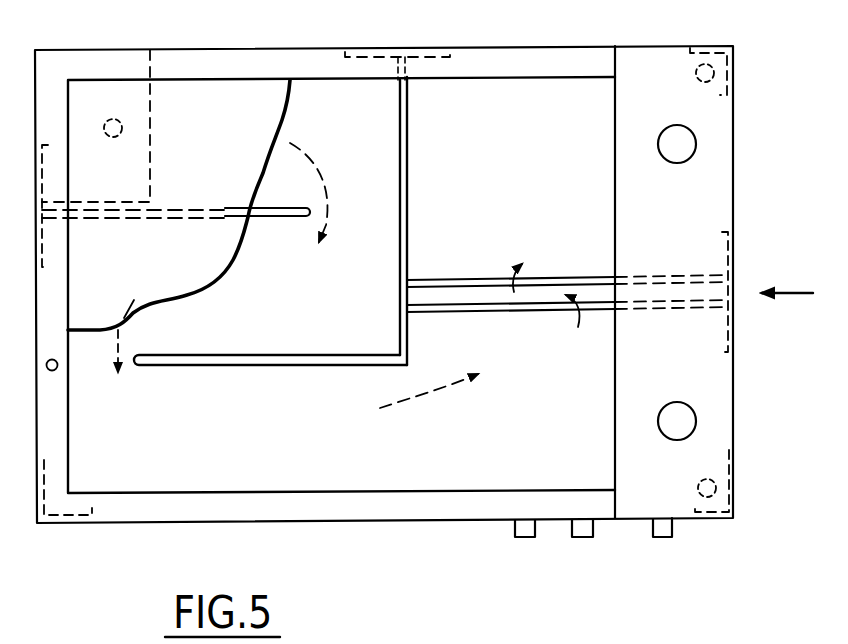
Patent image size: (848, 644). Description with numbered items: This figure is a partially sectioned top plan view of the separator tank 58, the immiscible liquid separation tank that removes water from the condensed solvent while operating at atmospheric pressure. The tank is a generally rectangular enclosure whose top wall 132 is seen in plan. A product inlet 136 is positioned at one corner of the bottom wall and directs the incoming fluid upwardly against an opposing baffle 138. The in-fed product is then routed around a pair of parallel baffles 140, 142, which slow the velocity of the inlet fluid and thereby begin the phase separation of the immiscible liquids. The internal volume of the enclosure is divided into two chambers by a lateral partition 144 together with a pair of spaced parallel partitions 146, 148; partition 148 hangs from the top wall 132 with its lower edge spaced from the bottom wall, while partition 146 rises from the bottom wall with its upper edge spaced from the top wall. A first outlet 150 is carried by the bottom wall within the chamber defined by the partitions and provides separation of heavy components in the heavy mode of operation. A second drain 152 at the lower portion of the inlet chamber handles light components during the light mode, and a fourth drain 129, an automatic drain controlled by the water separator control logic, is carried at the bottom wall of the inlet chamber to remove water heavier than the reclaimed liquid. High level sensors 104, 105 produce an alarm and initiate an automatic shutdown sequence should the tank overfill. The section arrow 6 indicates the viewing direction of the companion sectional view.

The separator tank 58 is at (632, 36).
The top wall 132 is at (233, 80).
The product inlet 136 is at (115, 117).
The baffle 138 is at (142, 153).
The parallel baffle 140 is at (273, 207).
The parallel baffle 142 is at (259, 355).
The lateral partition 144 is at (410, 168).
The partition 146 is at (445, 279).
The partition 148 is at (545, 312).
The first outlet 150 is at (714, 71).
The high level sensor 104 is at (696, 147).
The high level sensor 105 is at (694, 413).
The automatic drain 129 is at (714, 484).
The second drain 152 is at (523, 534).
The section view arrow 6 is at (784, 293).